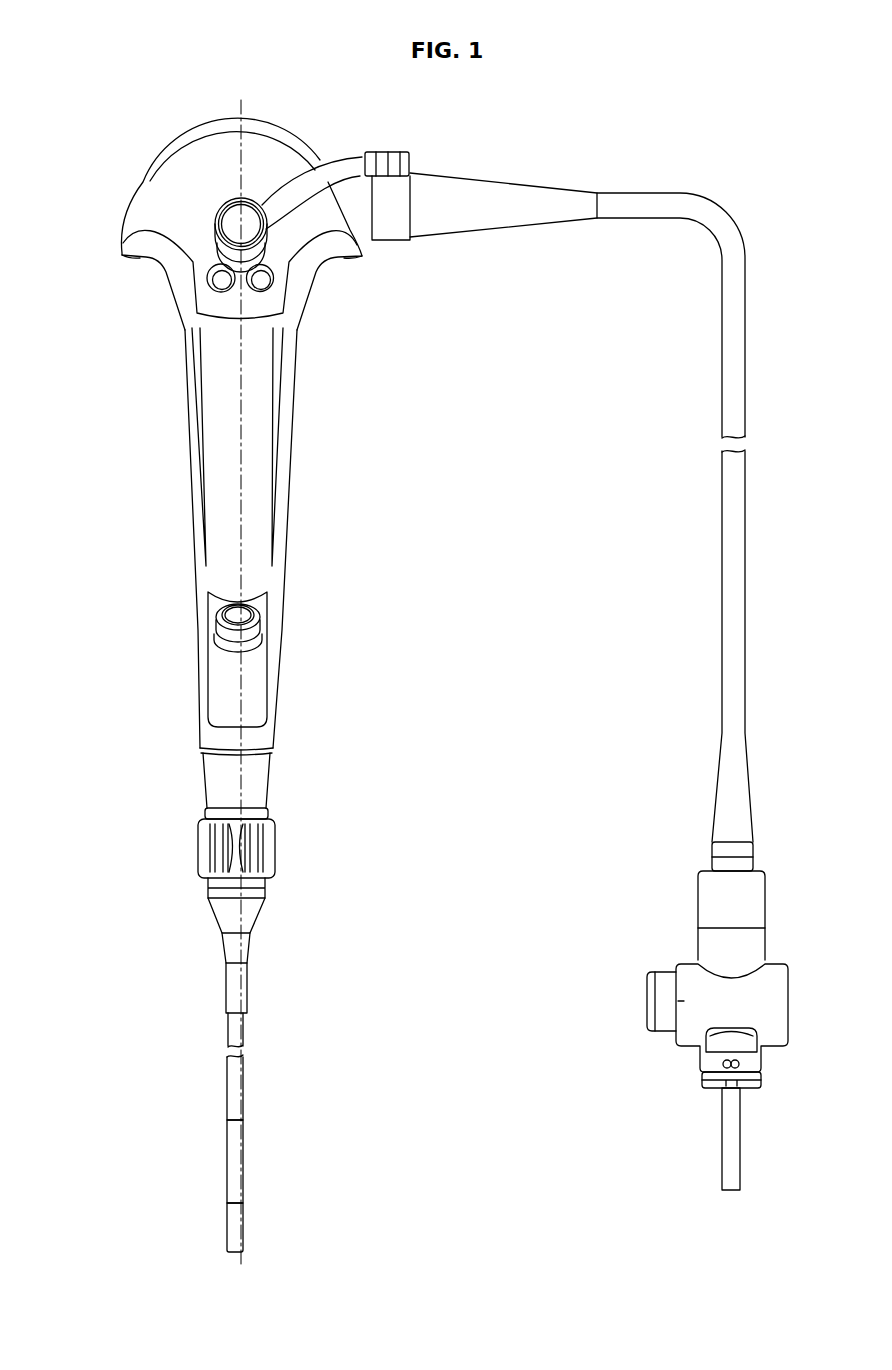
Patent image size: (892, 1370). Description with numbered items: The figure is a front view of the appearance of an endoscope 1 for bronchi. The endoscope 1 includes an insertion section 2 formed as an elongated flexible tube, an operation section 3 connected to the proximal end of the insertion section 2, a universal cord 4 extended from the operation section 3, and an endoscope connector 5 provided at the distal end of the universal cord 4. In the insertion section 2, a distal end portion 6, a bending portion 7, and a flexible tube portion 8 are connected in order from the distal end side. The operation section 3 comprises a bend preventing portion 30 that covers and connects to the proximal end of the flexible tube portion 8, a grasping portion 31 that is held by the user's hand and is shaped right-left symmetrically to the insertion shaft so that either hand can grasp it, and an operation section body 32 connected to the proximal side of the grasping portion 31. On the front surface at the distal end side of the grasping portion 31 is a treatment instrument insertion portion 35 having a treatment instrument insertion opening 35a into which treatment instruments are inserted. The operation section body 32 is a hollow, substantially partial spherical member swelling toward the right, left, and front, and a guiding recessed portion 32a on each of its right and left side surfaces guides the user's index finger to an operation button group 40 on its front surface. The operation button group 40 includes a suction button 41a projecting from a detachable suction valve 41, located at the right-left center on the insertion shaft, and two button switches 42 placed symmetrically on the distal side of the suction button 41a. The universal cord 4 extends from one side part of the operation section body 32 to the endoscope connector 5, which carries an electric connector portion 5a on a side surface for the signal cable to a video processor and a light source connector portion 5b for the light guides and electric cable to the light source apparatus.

The endoscope 1 is at (699, 136).
The insertion section 2 is at (291, 1063).
The operation section 3 is at (362, 463).
The universal cord 4 is at (706, 568).
The endoscope connector 5 is at (626, 970).
The electric connector portion 5a is at (647, 1000).
The light source connector portion 5b is at (741, 1160).
The distal end portion 6 is at (245, 1228).
The bending portion 7 is at (245, 1160).
The flexible tube portion 8 is at (245, 1080).
The bend preventing portion 30 is at (263, 912).
The grasping portion 31 is at (312, 519).
The operation section body 32 is at (340, 298).
The guiding recessed portion 32a is at (136, 262).
The treatment instrument insertion portion 35 is at (228, 687).
The treatment instrument insertion opening 35a is at (237, 615).
The operation button group 40 is at (210, 165).
The suction valve 41 is at (255, 201).
The suction button 41a is at (234, 216).
The button switches 42 is at (258, 284).